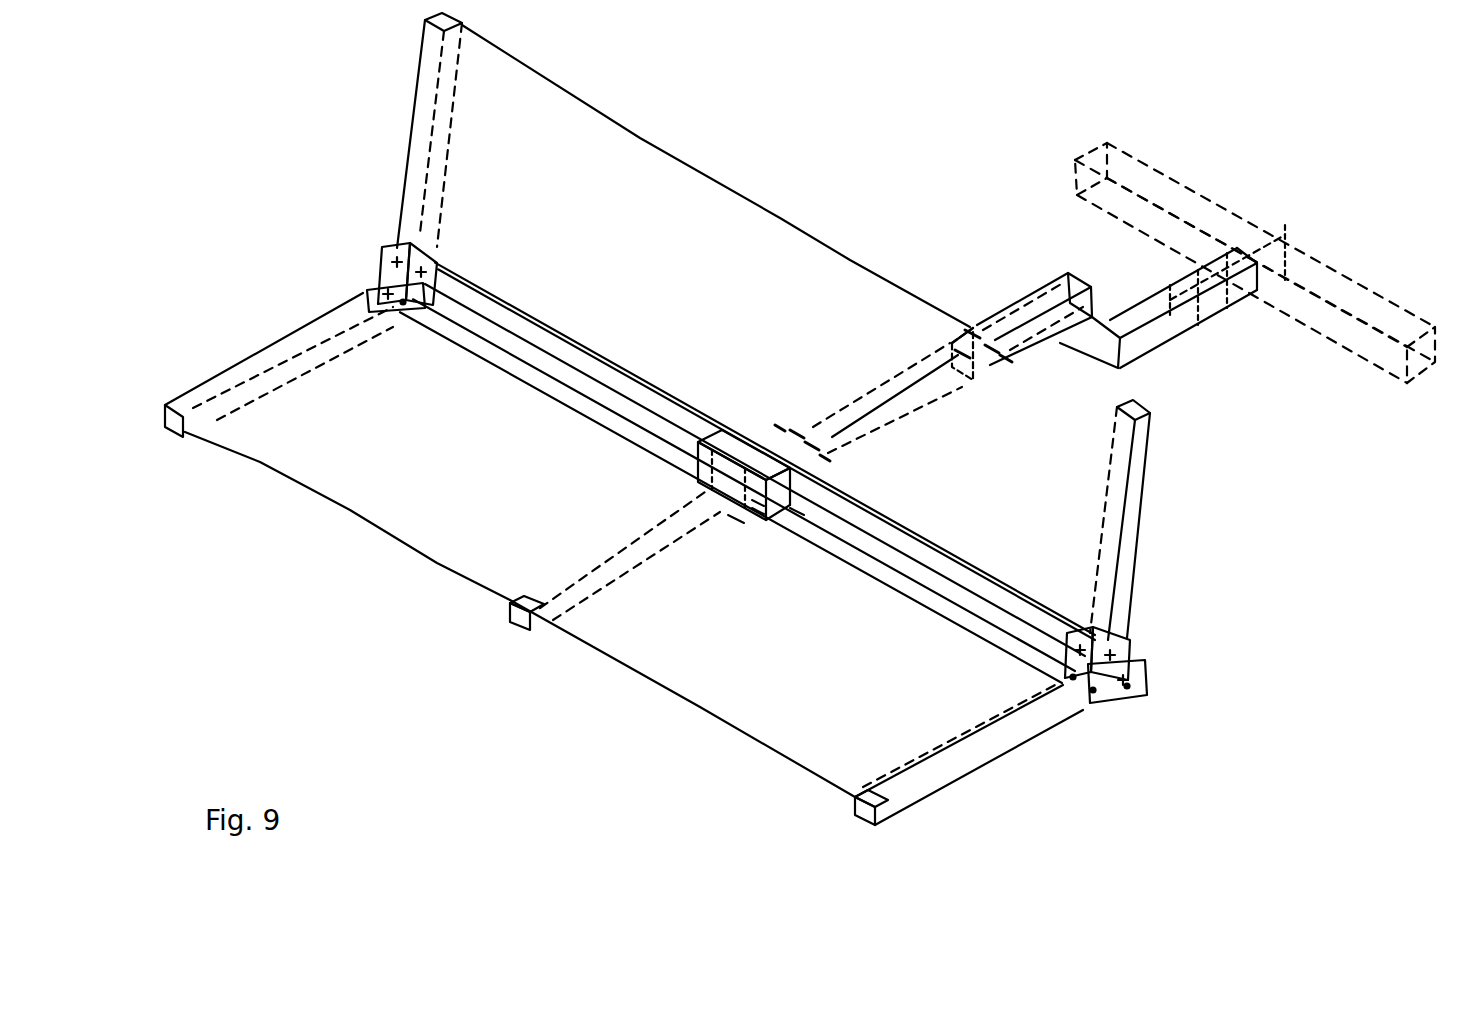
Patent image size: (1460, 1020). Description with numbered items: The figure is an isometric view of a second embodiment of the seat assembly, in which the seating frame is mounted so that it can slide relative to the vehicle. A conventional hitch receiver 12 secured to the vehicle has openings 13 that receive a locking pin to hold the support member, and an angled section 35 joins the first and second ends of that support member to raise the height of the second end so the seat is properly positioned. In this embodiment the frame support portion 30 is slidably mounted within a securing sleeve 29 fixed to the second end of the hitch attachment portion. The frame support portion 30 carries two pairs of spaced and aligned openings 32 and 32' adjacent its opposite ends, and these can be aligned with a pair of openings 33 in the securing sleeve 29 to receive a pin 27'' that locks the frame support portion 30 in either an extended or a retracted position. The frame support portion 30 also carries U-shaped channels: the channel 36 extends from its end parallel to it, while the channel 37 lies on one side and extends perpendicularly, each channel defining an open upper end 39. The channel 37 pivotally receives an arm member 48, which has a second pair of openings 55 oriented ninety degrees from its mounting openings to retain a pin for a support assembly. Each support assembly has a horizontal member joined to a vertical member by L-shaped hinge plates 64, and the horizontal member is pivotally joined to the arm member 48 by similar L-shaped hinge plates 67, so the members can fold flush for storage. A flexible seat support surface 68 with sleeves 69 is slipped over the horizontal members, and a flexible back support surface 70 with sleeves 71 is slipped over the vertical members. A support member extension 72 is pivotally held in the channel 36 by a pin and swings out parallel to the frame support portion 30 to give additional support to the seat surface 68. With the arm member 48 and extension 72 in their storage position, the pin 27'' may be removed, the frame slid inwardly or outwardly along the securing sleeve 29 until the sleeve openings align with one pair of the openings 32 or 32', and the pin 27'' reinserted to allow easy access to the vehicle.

The hitch receiver 12 is at (1288, 240).
The openings 13 is at (1238, 300).
The pin 27'' is at (969, 234).
The securing sleeve 29 is at (1040, 288).
The frame support portion 30 is at (876, 385).
The openings 32 is at (851, 459).
The openings 32' is at (1021, 384).
The openings 33 is at (956, 335).
The angled section 35 is at (1085, 343).
The channel 36 is at (760, 522).
The channel 37 is at (700, 460).
The open upper end 39 is at (797, 513).
The arm member 48 is at (532, 377).
The openings 55 is at (922, 584).
The hinge plates 64 is at (378, 246).
The hinge plates 67 is at (378, 294).
The support surface 68 is at (432, 568).
The sleeves 69 is at (275, 340).
The support surface 70 is at (704, 168).
The sleeves 71 is at (418, 79).
The support member extension 72 is at (665, 560).